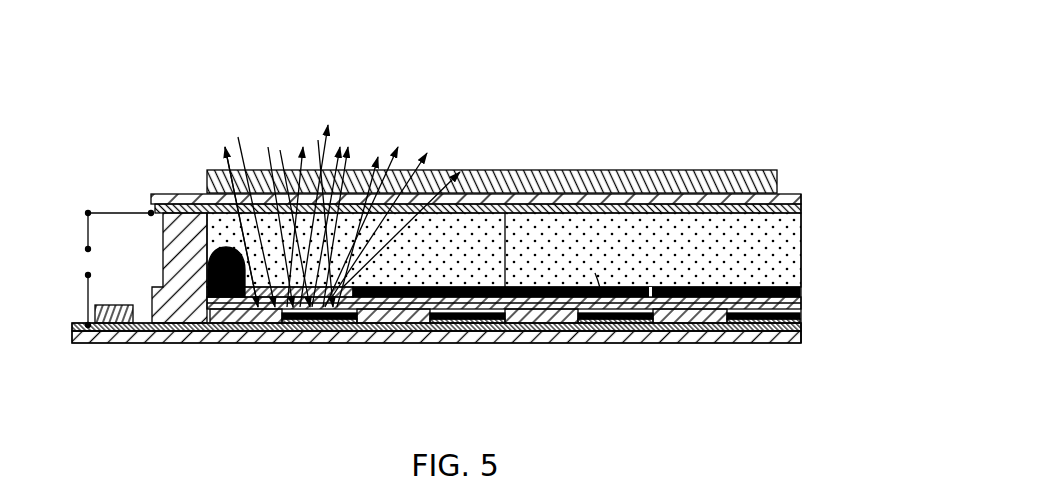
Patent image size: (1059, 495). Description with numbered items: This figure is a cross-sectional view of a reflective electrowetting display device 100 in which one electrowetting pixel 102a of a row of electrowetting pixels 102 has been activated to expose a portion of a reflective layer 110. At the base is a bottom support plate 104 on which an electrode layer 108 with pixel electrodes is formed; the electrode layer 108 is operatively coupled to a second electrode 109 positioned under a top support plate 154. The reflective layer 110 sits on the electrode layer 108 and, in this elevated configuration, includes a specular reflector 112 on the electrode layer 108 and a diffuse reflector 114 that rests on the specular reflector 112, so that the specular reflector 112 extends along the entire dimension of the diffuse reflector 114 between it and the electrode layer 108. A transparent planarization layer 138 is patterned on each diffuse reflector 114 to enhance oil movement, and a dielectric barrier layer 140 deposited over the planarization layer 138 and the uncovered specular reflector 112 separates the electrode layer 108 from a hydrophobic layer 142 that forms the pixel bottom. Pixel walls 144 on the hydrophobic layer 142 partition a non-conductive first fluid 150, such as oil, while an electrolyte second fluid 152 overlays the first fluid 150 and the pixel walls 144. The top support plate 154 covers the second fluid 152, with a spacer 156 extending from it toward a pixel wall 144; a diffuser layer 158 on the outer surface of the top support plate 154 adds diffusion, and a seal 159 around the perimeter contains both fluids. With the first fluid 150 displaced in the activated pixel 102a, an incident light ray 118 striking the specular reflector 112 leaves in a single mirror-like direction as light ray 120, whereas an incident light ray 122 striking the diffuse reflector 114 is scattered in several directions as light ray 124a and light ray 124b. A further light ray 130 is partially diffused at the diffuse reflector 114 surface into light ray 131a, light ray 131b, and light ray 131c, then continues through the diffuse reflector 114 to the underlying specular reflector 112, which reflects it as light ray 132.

The reflective electrowetting display device 100 is at (729, 101).
The electrowetting pixel 102 is at (431, 378).
The electrowetting pixel 102a is at (287, 378).
The bottom support plate 104 is at (92, 343).
The electrode layer 108 is at (147, 343).
The second electrode 109 is at (802, 210).
The reflective layer 110 is at (808, 322).
The specular reflector 112 is at (223, 343).
The diffuse reflector 114 is at (338, 343).
The incident light ray 118 is at (221, 153).
The light ray 120 is at (303, 147).
The incident light ray 122 is at (238, 137).
The light ray 124a is at (331, 130).
The light ray 124b is at (400, 144).
The light ray 130 is at (268, 147).
The light ray 131a is at (224, 146).
The light ray 131b is at (362, 157).
The light ray 131c is at (462, 176).
The light ray 132 is at (428, 165).
The planarization layer 138 is at (800, 383).
The dielectric barrier layer 140 is at (790, 305).
The hydrophobic layer 142 is at (802, 295).
The pixel walls 144 is at (352, 290).
The first fluid 150 is at (208, 270).
The second fluid 152 is at (476, 255).
The top support plate 154 is at (172, 198).
The spacer 156 is at (508, 222).
The diffuser layer 158 is at (668, 178).
The seal 159 is at (165, 236).